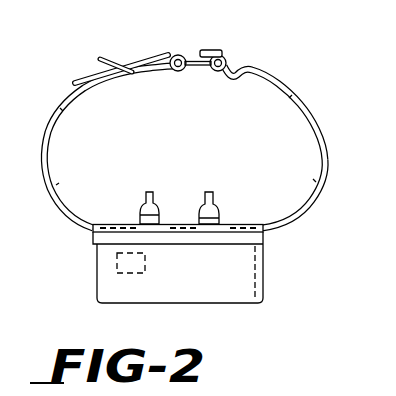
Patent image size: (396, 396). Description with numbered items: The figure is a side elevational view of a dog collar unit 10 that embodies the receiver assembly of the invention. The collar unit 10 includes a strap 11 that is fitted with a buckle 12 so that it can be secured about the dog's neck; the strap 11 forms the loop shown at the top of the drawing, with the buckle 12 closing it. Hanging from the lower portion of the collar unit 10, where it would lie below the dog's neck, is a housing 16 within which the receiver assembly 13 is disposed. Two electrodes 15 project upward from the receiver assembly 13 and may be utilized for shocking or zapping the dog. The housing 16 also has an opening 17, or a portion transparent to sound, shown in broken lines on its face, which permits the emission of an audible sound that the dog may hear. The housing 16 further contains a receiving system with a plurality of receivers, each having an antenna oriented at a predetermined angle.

The collar unit 10 is at (210, 168).
The strap 11 is at (327, 167).
The buckle 12 is at (226, 55).
The receiver assembly 13 is at (186, 272).
The electrodes 15 is at (208, 191).
The housing 16 is at (96, 288).
The opening 17 is at (117, 262).